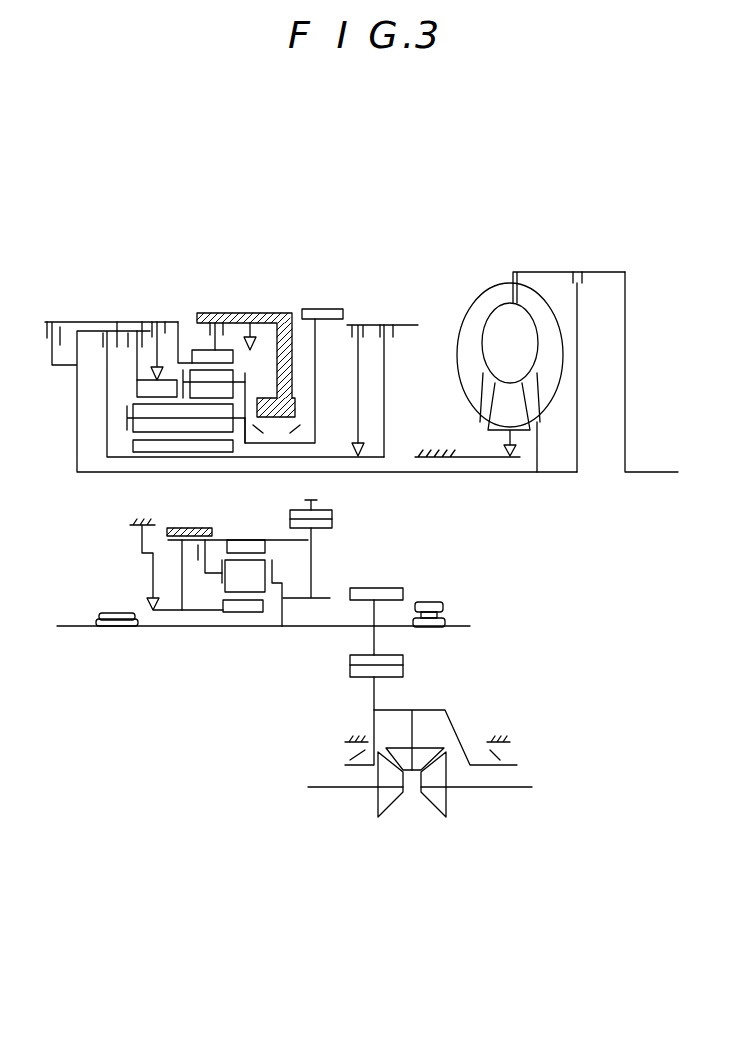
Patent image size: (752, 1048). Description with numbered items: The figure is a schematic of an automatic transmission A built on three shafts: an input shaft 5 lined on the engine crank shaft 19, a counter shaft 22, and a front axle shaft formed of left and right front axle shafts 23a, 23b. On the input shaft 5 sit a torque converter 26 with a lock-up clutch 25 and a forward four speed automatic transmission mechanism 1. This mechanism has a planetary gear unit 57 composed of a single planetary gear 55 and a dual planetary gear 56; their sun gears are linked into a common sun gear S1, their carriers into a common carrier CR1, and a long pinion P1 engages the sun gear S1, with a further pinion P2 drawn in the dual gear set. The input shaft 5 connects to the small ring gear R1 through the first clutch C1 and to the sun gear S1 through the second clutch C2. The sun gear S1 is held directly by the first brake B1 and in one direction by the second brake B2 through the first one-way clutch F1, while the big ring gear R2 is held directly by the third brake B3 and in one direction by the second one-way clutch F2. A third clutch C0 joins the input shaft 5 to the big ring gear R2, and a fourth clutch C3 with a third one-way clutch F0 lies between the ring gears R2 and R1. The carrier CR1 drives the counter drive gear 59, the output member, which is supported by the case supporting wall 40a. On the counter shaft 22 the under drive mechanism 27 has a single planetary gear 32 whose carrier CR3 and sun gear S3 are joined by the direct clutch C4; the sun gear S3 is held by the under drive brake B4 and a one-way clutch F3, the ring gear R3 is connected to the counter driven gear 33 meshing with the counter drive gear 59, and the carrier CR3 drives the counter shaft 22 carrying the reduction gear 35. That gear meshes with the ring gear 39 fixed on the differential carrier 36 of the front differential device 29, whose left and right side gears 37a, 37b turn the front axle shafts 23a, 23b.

The forward four speed automatic transmission mechanism 1 is at (92, 267).
The automatic transmission A is at (135, 262).
The third clutch C0 is at (47, 322).
The first (forward) clutch C1 is at (143, 323).
The second (reverse) clutch C2 is at (103, 323).
The fourth clutch C3 is at (155, 320).
The fifth (direct) clutch C4 is at (195, 562).
The first brake B1 is at (386, 325).
The second brake B2 is at (353, 325).
The third brake B3 is at (210, 320).
The fourth (under drive) brake B4 is at (237, 520).
The third one-way clutch F0 is at (152, 375).
The first one-way clutch F1 is at (353, 449).
The second one-way clutch F2 is at (251, 320).
The one-way clutch F3 is at (150, 610).
The planetary gear unit 57 is at (224, 228).
The single planetary gear 55 is at (167, 357).
The dual planetary gear 56 is at (193, 346).
The supporting wall 40a is at (297, 310).
The counter drive gear 59 is at (320, 308).
The ring gear (small ring gear) R1 is at (145, 390).
The ring gear (big ring gear) R2 is at (215, 359).
The ring gear R3 is at (258, 550).
The long pinion P1 is at (143, 427).
The pinion P2 is at (225, 393).
The common sun gear S1 is at (176, 453).
The sun gear S3 is at (236, 606).
The common carrier CR1 is at (240, 428).
The carrier CR3 is at (281, 628).
The torque converter 26 is at (495, 276).
The lock-up clutch 25 is at (584, 280).
The engine crank shaft 19 is at (648, 472).
The input shaft 5 is at (437, 474).
The counter shaft 22 is at (160, 628).
The under drive mechanism 27 is at (136, 567).
The single planetary gear 32 is at (244, 529).
The counter driven gear 33 is at (335, 521).
The reduction gear 35 is at (385, 590).
The ring gear 39 is at (357, 672).
The differential carrier 36 is at (430, 708).
The front differential device 29 is at (419, 802).
The left side gear 37a is at (393, 818).
The right side gear 37b is at (437, 818).
The left front axle shaft 23a is at (343, 789).
The right front axle shaft 23b is at (510, 789).